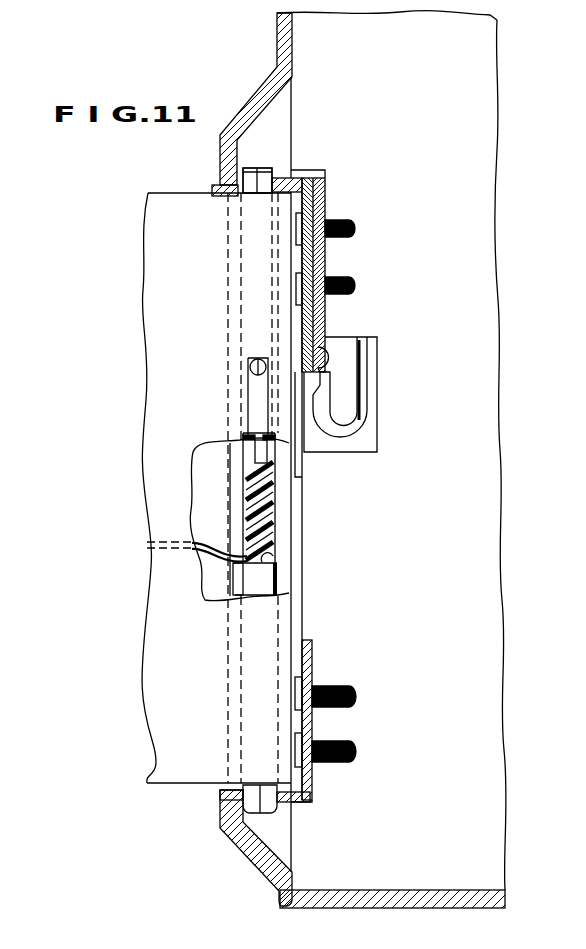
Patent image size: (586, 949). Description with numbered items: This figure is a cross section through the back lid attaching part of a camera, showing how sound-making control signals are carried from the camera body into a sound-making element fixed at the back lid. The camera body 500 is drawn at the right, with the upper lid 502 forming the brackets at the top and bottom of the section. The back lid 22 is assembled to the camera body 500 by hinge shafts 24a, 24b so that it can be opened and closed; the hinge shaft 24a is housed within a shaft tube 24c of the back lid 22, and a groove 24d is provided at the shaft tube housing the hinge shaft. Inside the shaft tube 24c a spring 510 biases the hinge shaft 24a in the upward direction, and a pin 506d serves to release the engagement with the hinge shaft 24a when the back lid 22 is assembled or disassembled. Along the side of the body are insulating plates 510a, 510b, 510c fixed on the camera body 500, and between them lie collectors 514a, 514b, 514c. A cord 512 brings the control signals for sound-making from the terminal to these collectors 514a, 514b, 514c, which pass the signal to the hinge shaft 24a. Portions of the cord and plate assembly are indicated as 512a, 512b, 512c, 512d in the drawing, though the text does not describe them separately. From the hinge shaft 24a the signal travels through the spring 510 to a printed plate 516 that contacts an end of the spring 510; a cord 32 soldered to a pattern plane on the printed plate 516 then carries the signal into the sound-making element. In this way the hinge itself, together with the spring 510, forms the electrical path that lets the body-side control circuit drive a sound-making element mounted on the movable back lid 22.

The back lid 22 is at (172, 755).
The hinge shaft 24a is at (252, 285).
The hinge shaft 24b is at (255, 700).
The shaft tube 24c is at (236, 760).
The groove 24d is at (255, 390).
The cord 32 is at (202, 557).
The camera body 500 is at (483, 311).
The upper lid 502 is at (285, 40).
The pin 506d is at (255, 357).
The spring 510 is at (268, 483).
The insulating plate 510a is at (327, 318).
The insulating plate 510b is at (327, 263).
The insulating plate 510c is at (325, 197).
The cord 512 is at (365, 413).
The plate portion 512a is at (325, 304).
The plate portion 512b is at (307, 258).
The plate portion 512c is at (300, 203).
The flange 512d is at (289, 176).
The collector 514a is at (327, 334).
The collector 514b is at (324, 252).
The collector 514c is at (326, 178).
The printed plate 516 is at (277, 567).